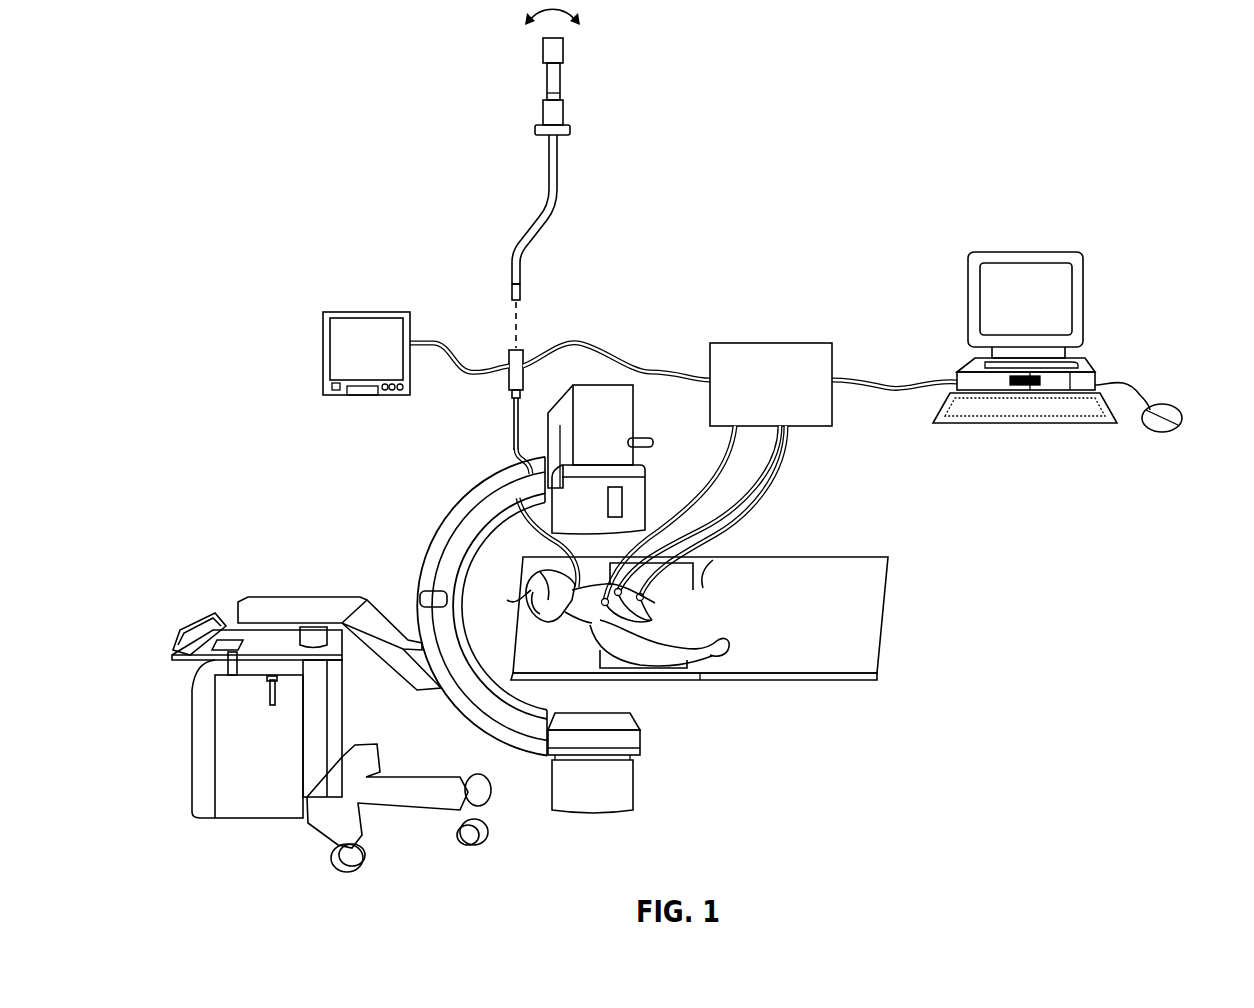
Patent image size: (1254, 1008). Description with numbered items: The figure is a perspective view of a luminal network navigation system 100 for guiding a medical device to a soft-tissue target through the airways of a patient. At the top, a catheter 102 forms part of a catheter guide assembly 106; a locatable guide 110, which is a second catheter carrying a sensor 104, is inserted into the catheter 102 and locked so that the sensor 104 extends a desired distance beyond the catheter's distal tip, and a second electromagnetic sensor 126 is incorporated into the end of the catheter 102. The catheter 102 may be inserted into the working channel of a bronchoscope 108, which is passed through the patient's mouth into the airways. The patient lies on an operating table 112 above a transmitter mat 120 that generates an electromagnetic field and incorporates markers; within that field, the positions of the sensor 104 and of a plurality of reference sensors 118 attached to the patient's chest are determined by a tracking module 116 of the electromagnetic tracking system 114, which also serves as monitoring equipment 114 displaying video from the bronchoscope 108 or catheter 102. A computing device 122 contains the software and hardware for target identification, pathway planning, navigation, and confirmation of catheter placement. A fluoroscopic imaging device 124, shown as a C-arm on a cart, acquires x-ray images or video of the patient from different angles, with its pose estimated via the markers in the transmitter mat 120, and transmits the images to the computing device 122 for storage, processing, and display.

The system 100 is at (1006, 174).
The catheter 102 is at (556, 206).
The sensor 104 is at (521, 293).
The catheter guide assembly 106 is at (543, 112).
The bronchoscope 108 is at (514, 430).
The locatable guide 110 is at (583, 84).
The operating table 112 is at (557, 683).
The monitoring equipment / tracking system 114 is at (323, 350).
The tracking module 116 is at (794, 396).
The reference sensors 118 is at (697, 636).
The transmitter mat 120 is at (630, 667).
The computing device 122 is at (1083, 300).
The fluoroscopic imaging device 124 is at (241, 558).
The second electromagnetic sensor 126 is at (512, 283).